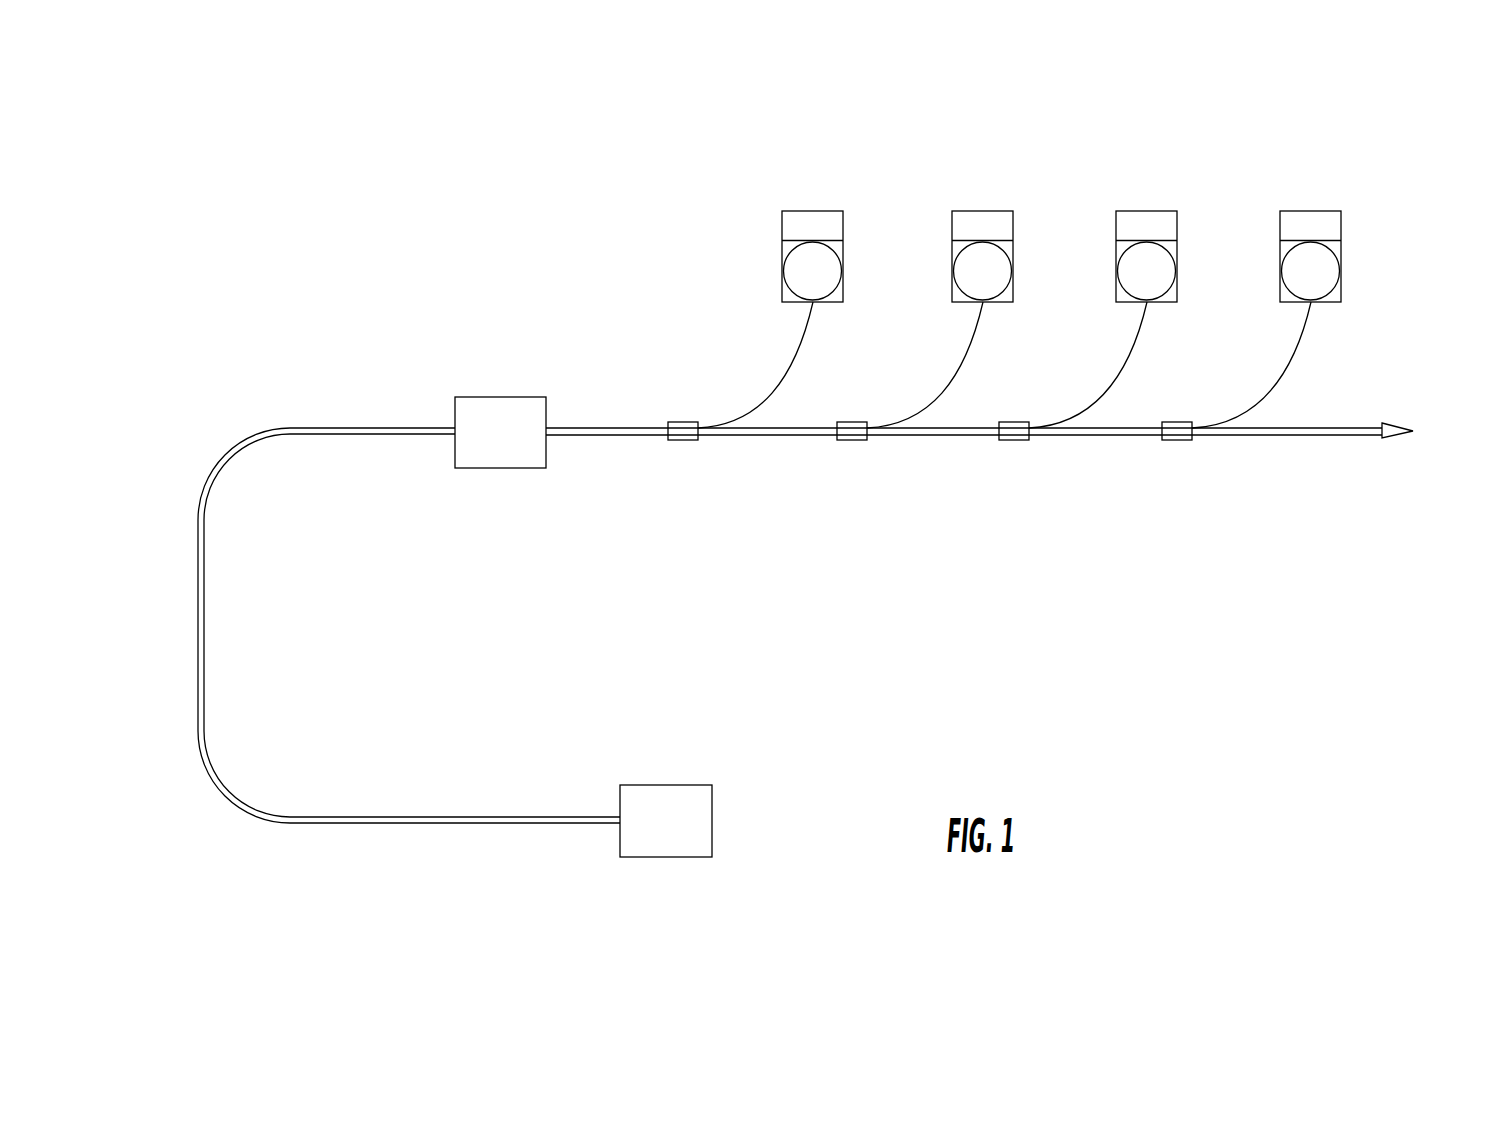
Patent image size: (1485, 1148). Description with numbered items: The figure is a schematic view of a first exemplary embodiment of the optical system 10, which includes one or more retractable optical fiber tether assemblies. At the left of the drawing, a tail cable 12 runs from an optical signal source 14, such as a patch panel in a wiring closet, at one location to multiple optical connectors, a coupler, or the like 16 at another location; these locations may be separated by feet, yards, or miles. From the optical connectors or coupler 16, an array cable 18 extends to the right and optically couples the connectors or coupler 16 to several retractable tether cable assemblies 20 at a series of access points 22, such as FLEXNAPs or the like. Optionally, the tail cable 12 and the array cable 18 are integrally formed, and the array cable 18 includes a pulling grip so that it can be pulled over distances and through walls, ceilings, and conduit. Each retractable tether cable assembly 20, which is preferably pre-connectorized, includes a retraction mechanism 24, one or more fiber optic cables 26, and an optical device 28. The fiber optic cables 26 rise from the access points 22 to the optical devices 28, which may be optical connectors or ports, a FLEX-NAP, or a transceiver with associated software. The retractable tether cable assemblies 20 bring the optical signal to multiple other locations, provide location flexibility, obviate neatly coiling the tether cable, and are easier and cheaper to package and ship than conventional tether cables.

The optical system 10 is at (1150, 670).
The tail cable 12 is at (197, 603).
The optical signal source 14 is at (683, 785).
The optical connectors or coupler 16 is at (510, 397).
The array cable 18 is at (608, 427).
The retractable tether cable assembly 20 is at (872, 240).
The access point 22 is at (683, 440).
The retraction mechanism 24 is at (801, 280).
The fiber optic cable 26 is at (806, 350).
The optical device 28 is at (801, 238).